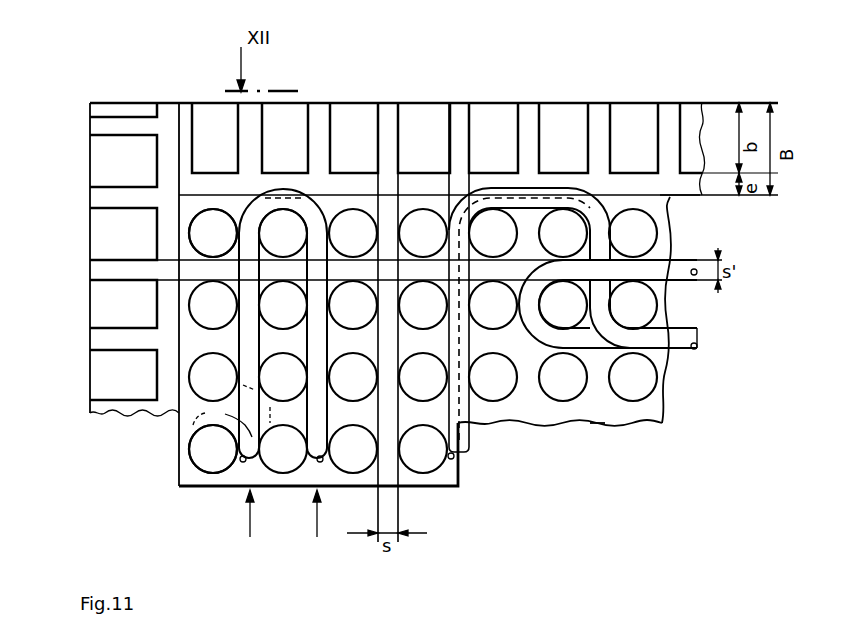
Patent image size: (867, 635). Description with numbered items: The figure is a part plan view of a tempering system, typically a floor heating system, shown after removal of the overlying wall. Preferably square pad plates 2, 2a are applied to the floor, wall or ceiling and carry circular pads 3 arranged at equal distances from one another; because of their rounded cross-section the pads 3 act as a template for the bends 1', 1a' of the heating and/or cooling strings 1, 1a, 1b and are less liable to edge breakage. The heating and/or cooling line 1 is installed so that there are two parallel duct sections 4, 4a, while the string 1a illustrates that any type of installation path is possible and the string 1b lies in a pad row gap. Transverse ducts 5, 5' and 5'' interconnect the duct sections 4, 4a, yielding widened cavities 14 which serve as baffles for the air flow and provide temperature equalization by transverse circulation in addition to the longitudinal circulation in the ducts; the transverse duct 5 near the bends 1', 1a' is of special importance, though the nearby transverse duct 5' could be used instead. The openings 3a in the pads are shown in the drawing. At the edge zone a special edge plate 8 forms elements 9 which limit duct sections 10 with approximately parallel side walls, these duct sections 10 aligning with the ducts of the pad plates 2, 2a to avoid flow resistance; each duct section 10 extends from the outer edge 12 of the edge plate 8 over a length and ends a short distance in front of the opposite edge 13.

The heating and/or cooling string 1 is at (270, 482).
The bend 1' is at (284, 256).
The heating and/or cooling string 1a is at (608, 330).
The bend 1a' is at (572, 262).
The heating and/or cooling string 1b is at (735, 340).
The pad plate 2 is at (447, 482).
The pad plate 2a is at (600, 415).
The pad 3 is at (555, 400).
The tube opening 3a is at (270, 217).
The duct section 4 is at (248, 525).
The duct section 4a is at (319, 525).
The transverse duct 5 is at (127, 176).
The transverse duct 5' is at (122, 246).
The transverse duct 5'' is at (117, 314).
The edge plate 8 is at (693, 117).
The form element 9 is at (505, 108).
The duct section 10 is at (392, 108).
The outer edge 12 is at (630, 102).
The edge 13 is at (688, 200).
The widened cavity 14 is at (180, 428).